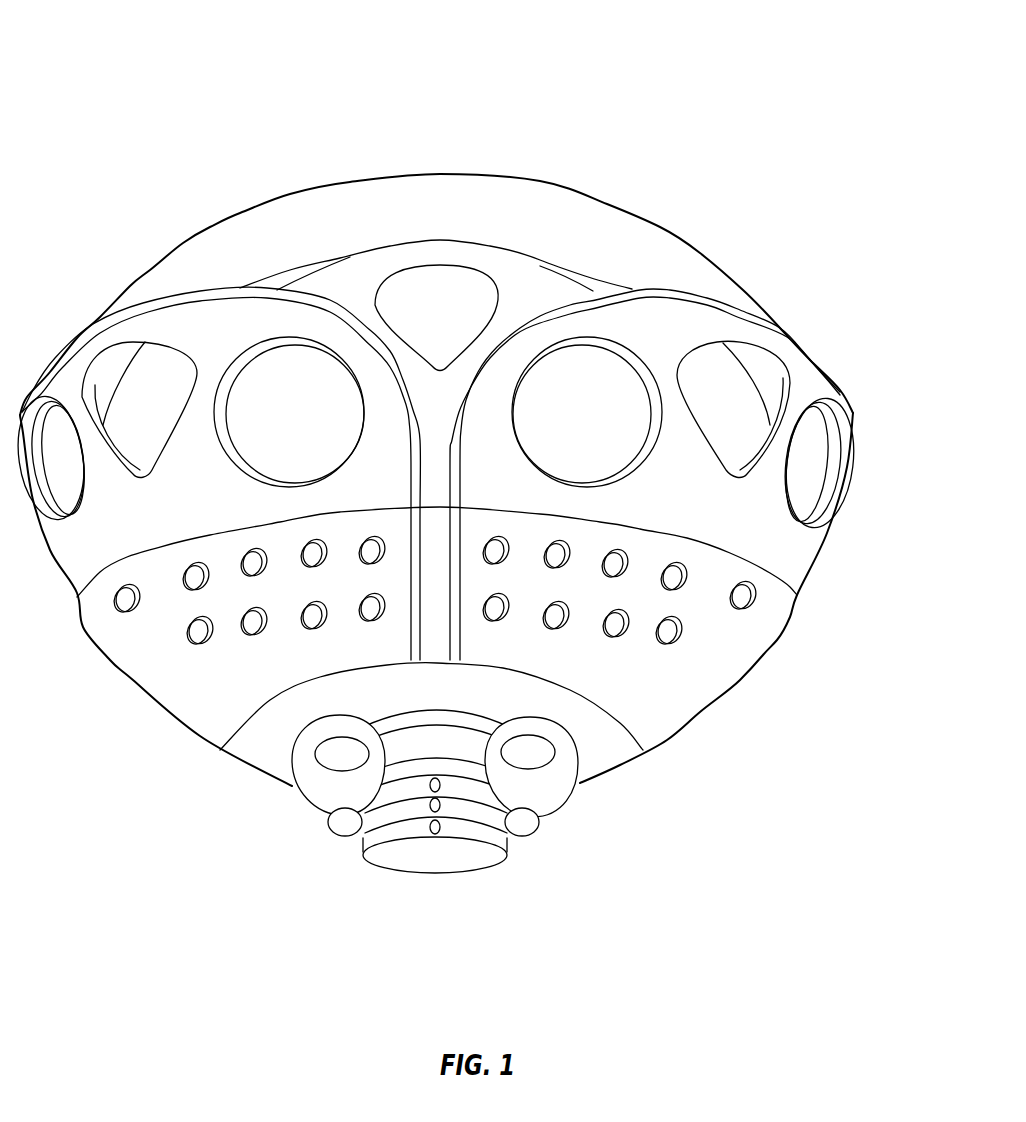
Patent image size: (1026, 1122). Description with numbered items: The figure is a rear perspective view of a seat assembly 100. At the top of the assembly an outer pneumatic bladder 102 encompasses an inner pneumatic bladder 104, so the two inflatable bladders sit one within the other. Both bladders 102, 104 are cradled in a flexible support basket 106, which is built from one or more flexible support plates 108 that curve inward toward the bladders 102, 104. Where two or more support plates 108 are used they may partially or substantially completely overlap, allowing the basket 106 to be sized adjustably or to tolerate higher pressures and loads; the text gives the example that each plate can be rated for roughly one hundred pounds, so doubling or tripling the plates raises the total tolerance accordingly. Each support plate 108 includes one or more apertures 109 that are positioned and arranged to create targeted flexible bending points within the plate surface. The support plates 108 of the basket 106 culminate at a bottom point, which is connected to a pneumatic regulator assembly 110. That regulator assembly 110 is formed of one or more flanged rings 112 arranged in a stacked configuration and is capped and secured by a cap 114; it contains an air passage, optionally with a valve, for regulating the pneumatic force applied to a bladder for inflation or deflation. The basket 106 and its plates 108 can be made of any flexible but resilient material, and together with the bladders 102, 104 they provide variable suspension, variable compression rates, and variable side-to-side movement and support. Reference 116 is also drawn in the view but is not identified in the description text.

The seat assembly 100 is at (143, 47).
The outer pneumatic bladder 102 is at (433, 176).
The inner pneumatic bladder 104 is at (290, 270).
The flexible support basket 106 is at (755, 720).
The flexible support plate 108 is at (793, 338).
The aperture 109 is at (832, 392).
The pneumatic regulator assembly 110 is at (330, 856).
The flanged ring 112 is at (496, 836).
The cap 114 is at (457, 873).
The lower housing 116 is at (228, 762).